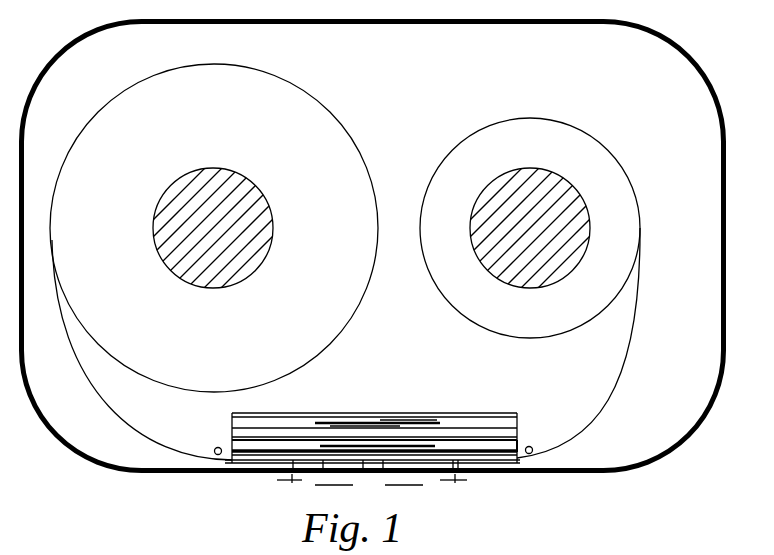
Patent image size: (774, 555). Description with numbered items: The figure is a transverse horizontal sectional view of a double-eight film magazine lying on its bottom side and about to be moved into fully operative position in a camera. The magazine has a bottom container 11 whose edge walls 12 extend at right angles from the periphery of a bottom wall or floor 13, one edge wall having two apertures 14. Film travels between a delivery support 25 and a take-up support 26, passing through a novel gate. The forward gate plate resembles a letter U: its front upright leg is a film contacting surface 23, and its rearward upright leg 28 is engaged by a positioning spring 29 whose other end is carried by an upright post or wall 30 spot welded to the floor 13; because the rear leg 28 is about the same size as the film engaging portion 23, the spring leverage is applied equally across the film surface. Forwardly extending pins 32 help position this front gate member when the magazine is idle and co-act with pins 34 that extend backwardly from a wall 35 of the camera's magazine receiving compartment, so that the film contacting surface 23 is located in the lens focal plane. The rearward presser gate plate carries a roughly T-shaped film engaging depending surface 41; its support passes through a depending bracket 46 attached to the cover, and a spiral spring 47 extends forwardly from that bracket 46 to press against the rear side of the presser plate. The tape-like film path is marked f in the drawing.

The bottom container 11 is at (716, 404).
The edge walls 12 is at (641, 26).
The bottom wall or floor 13 is at (626, 437).
The apertures 14 is at (341, 466).
The film contacting surface 23 is at (519, 462).
The delivery support 25 is at (258, 218).
The take-up support 26 is at (537, 168).
The rearward upright leg 28 is at (468, 430).
The positioning spring 29 is at (386, 424).
The upright post or wall 30 is at (293, 413).
The forwardly extending pins 32 is at (478, 472).
The pins 34 is at (371, 489).
The wall of magazine receiving compartment 35 is at (369, 488).
The film engaging depending surface 41 is at (518, 455).
The depending bracket 46 is at (231, 447).
The spring 47 is at (517, 448).
The tape f is at (624, 382).